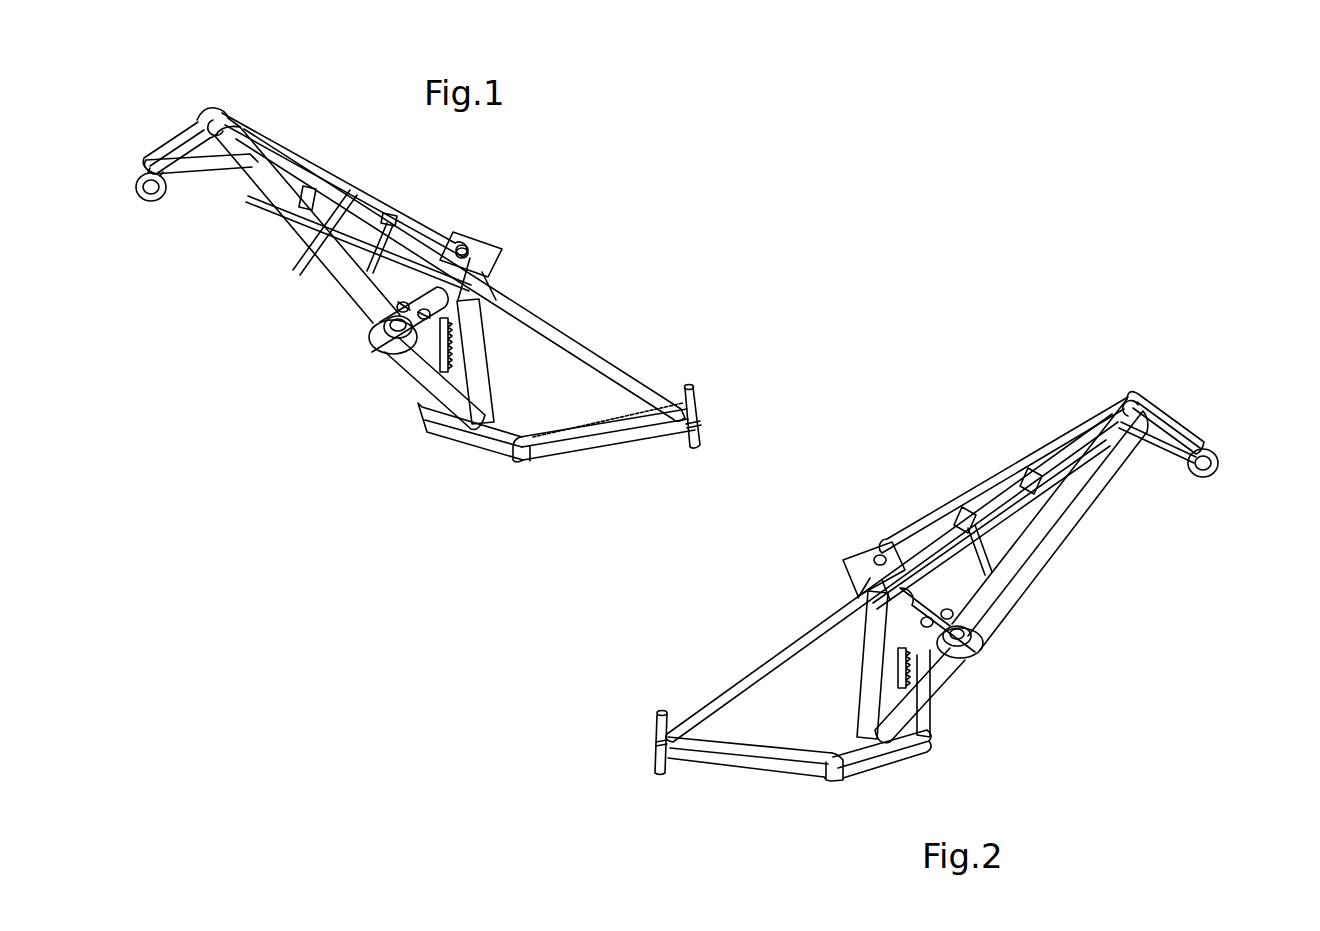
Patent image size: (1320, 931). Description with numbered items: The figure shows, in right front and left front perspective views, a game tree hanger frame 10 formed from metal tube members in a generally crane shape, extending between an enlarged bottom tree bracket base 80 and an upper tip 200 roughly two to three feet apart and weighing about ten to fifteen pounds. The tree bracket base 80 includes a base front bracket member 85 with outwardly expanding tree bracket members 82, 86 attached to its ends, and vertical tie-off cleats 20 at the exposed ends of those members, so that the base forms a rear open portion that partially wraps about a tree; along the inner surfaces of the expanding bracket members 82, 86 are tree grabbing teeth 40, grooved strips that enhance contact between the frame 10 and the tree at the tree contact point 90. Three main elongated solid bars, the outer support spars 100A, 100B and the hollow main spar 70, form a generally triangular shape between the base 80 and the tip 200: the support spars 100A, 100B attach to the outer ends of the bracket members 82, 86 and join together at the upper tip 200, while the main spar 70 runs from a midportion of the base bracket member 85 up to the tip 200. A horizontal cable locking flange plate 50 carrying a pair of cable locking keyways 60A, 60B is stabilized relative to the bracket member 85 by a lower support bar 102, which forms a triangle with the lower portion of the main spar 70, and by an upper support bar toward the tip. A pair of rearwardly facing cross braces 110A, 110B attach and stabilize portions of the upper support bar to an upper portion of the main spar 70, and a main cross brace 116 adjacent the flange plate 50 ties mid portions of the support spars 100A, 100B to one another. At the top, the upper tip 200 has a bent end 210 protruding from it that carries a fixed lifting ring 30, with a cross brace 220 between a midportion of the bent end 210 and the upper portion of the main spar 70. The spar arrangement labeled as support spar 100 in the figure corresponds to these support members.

In FIG. 1, the tree hanger frame 10 is at (588, 178).
In FIG. 1, the tie-off cleat 20 is at (693, 405).
In FIG. 2, the tie-off cleat 20 is at (657, 728).
In FIG. 1, the lifting ring 30 is at (150, 203).
In FIG. 1, the tree grabbing teeth 40 is at (450, 358).
In FIG. 1, the cable locking flange plate 50 is at (482, 260).
In FIG. 1, the cable locking keyway 60A is at (397, 353).
In FIG. 1, the cable locking keyway 60B is at (373, 342).
In FIG. 1, the main spar 70 is at (352, 288).
In FIG. 2, the main spar 70 is at (1033, 537).
In FIG. 1, the tree bracket base 80 is at (600, 458).
In FIG. 2, the tree bracket base 80 is at (632, 762).
In FIG. 2, the outwardly expanding tree bracket member 82 is at (753, 770).
In FIG. 1, the base front member bracket member 85 is at (470, 437).
In FIG. 2, the base front member bracket member 85 is at (890, 760).
In FIG. 2, the outwardly expanding tree bracket member 86 is at (930, 708).
In FIG. 1, the tree contact point 90 is at (470, 248).
In FIG. 1, the support arm 100 is at (378, 258).
In FIG. 1, the support spar 100A is at (577, 347).
In FIG. 2, the support spar 100B is at (763, 672).
In FIG. 2, the lower support bar 102 is at (870, 680).
In FIG. 1, the rearwardly facing cross brace 110A is at (387, 220).
In FIG. 2, the rearwardly facing cross brace 110A is at (967, 517).
In FIG. 1, the rearwardly facing cross brace 110B is at (313, 203).
In FIG. 2, the rearwardly facing cross brace 110B is at (1033, 477).
In FIG. 2, the main cross brace 116 is at (933, 583).
In FIG. 1, the upper tip 200 is at (160, 118).
In FIG. 2, the upper tip 200 is at (1188, 400).
In FIG. 1, the bent end 210 is at (187, 157).
In FIG. 1, the cross brace 220 is at (210, 163).